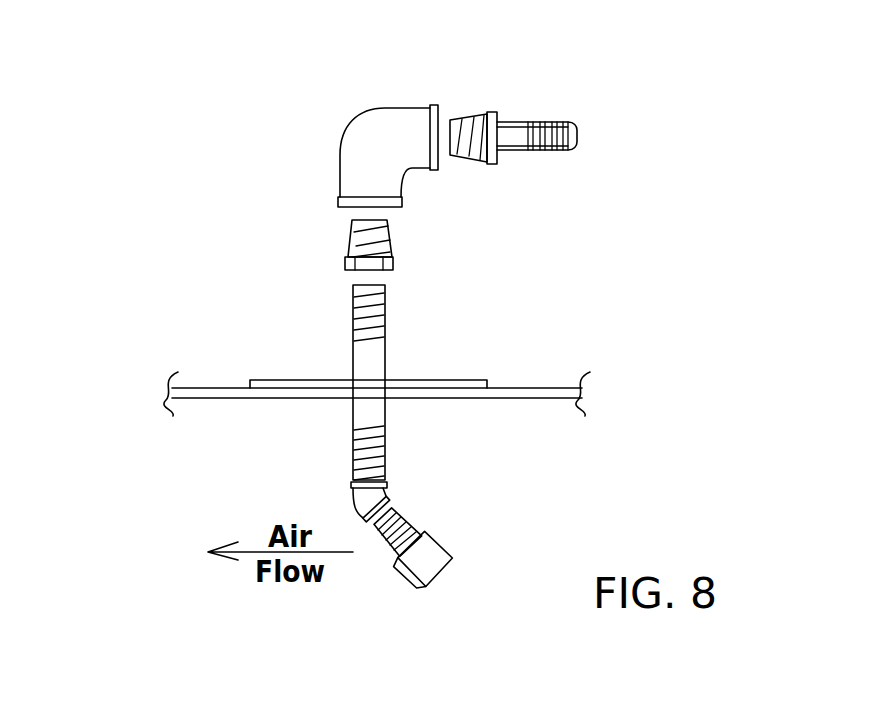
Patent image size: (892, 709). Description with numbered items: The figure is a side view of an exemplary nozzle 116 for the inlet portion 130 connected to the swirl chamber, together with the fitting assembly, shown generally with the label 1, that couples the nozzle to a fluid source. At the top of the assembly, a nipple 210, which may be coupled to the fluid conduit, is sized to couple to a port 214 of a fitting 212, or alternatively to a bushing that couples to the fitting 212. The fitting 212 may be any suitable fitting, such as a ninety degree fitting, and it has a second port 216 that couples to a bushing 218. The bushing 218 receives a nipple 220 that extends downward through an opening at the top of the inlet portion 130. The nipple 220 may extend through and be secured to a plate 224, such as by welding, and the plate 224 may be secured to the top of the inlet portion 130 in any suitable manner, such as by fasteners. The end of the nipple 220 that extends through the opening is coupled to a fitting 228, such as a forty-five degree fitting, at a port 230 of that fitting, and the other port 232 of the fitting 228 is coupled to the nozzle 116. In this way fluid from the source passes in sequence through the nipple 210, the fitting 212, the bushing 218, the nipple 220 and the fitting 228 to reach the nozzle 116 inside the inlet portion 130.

The air flow connection assembly 1 is at (273, 217).
The nozzle 116 is at (433, 548).
The inlet portion 130 is at (532, 395).
The nipple 210 is at (512, 149).
The fitting 212 is at (412, 173).
The port 214 is at (438, 118).
The port 216 is at (348, 208).
The bushing 218 is at (345, 265).
The nipple 220 is at (352, 355).
The plate 224 is at (425, 382).
The fitting 228 is at (352, 500).
The port 230 is at (375, 481).
The port 232 is at (372, 528).